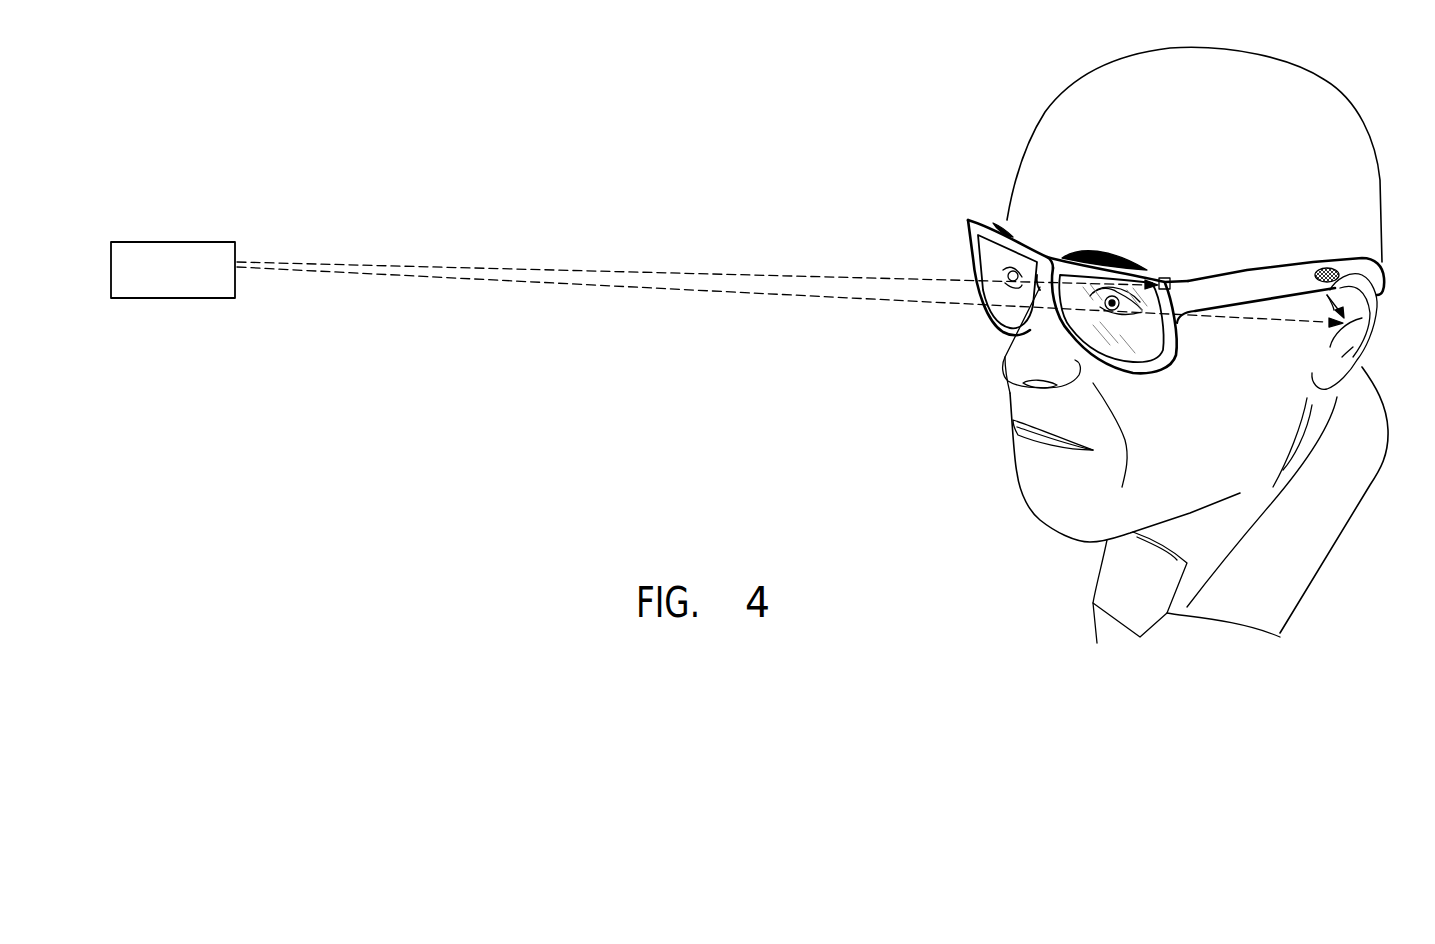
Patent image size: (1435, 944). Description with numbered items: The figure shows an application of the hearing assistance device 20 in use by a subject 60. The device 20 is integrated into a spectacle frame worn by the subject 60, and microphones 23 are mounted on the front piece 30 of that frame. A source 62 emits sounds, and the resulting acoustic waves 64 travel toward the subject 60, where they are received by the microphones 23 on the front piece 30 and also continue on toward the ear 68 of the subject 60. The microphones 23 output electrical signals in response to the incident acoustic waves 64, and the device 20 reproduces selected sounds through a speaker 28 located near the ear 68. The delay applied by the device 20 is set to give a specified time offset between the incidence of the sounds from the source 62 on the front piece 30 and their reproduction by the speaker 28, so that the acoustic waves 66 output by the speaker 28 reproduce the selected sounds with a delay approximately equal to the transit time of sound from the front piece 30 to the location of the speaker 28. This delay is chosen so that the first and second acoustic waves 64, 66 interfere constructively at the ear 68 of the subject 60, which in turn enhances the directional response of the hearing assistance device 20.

The subject 60 is at (1033, 130).
The hearing assistance device 20 is at (990, 328).
The front piece 30 is at (1167, 367).
The ear 68 is at (1350, 320).
The source 62 is at (150, 242).
The acoustic waves 64 is at (745, 272).
The microphones 23 is at (1167, 278).
The speaker 28 is at (1320, 268).
The acoustic waves 66 is at (1333, 290).